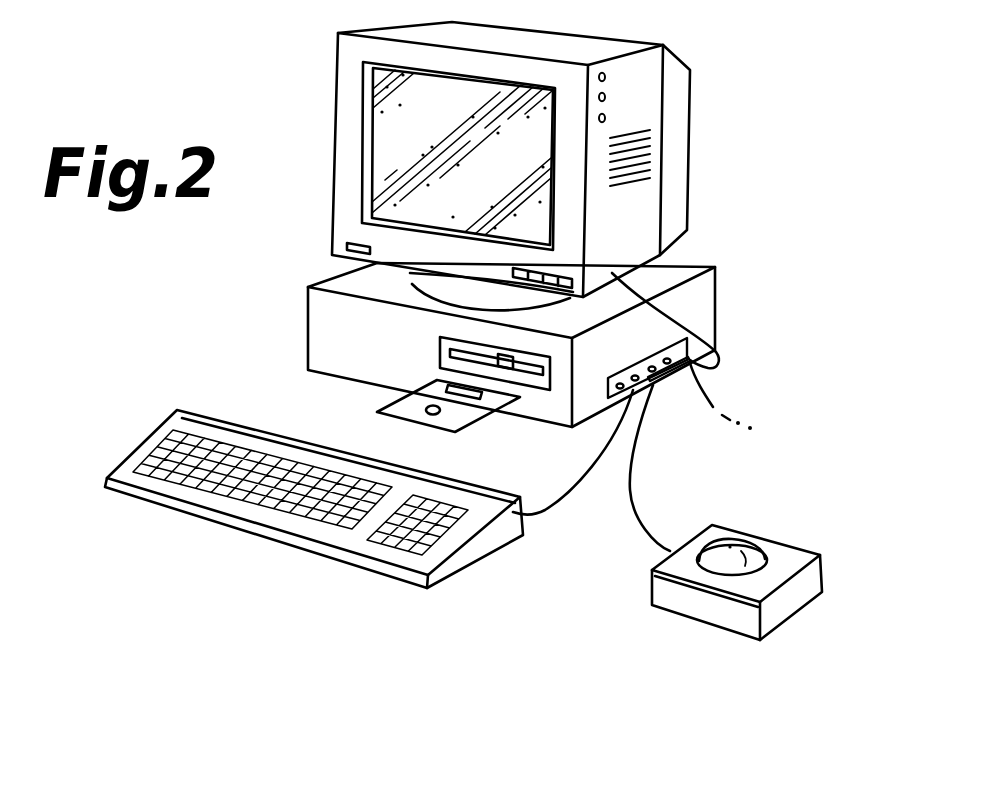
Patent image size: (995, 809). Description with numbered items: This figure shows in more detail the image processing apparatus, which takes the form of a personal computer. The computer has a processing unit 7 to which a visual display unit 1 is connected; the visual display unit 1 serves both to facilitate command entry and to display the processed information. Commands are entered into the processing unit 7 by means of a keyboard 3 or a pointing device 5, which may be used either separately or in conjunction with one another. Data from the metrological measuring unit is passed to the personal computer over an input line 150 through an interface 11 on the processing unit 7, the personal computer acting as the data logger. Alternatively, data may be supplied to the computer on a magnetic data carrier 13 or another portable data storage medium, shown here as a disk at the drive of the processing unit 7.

The visual display unit 1 is at (350, 95).
The keyboard 3 is at (290, 528).
The pointing device 5 is at (681, 597).
The processing unit 7 is at (697, 303).
The interface 11 is at (658, 383).
The magnetic data carrier 13 is at (376, 412).
The input line 150 is at (702, 397).